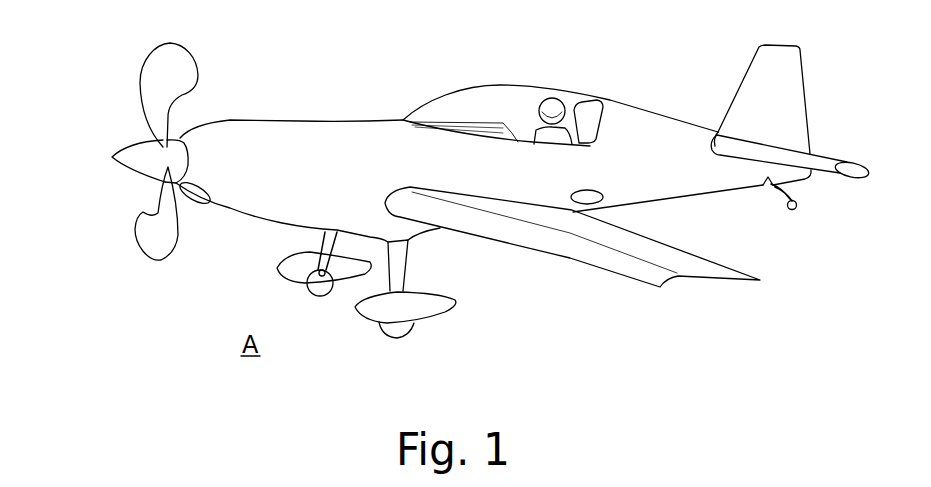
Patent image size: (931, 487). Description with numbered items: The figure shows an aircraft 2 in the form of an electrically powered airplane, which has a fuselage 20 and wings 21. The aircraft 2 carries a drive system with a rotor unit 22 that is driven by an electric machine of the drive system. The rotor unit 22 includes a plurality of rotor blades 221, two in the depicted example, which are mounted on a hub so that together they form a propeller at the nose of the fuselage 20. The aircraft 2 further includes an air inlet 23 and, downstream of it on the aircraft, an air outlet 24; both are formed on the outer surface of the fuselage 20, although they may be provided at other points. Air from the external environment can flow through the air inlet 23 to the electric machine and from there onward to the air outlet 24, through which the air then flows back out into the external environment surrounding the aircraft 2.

The aircraft 2 is at (364, 106).
The fuselage 20 is at (263, 130).
The wings 21 is at (565, 250).
The rotor unit 22 is at (129, 179).
The rotor blades 221 is at (160, 75).
The air inlet 23 is at (193, 202).
The air outlet 24 is at (590, 180).